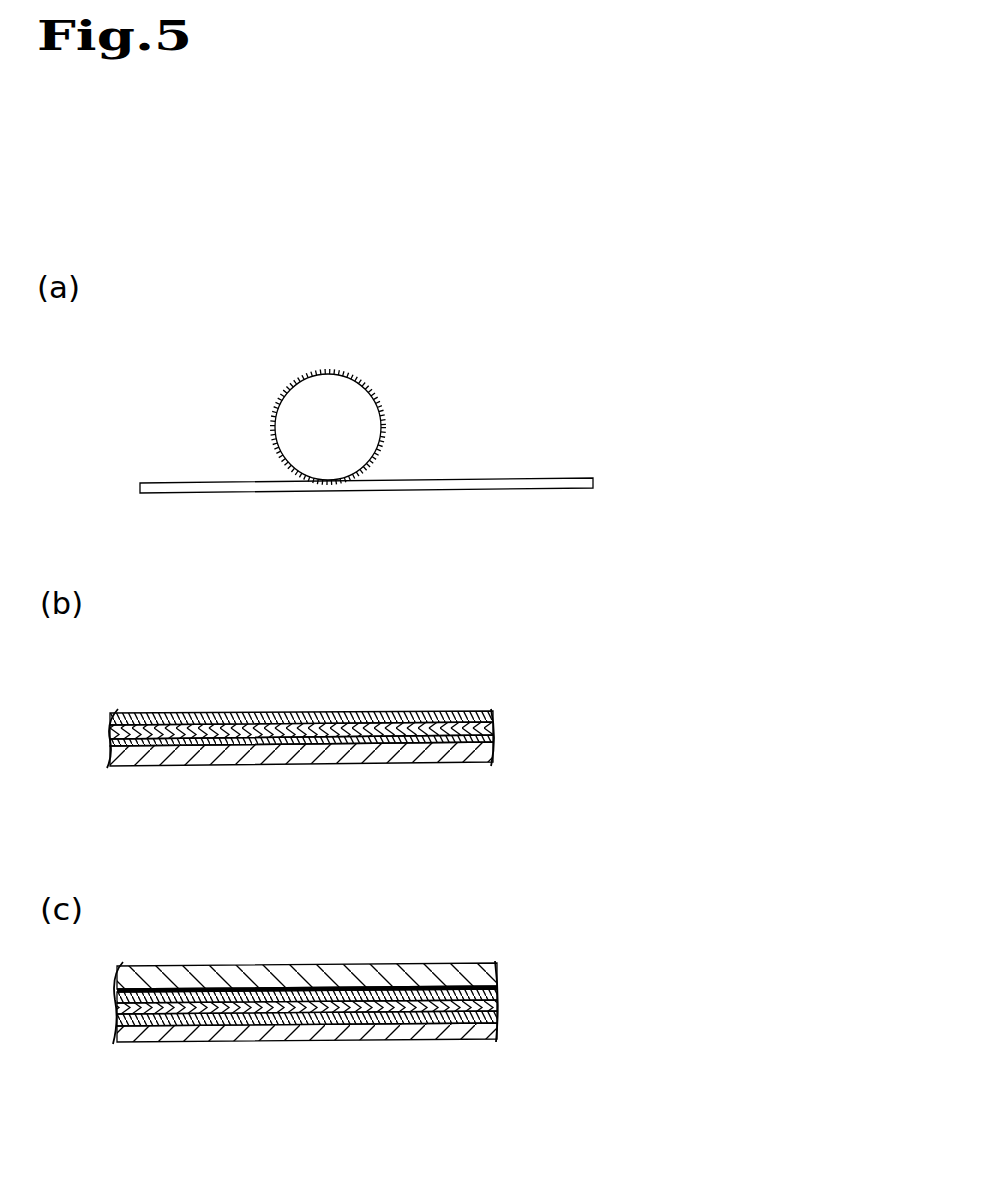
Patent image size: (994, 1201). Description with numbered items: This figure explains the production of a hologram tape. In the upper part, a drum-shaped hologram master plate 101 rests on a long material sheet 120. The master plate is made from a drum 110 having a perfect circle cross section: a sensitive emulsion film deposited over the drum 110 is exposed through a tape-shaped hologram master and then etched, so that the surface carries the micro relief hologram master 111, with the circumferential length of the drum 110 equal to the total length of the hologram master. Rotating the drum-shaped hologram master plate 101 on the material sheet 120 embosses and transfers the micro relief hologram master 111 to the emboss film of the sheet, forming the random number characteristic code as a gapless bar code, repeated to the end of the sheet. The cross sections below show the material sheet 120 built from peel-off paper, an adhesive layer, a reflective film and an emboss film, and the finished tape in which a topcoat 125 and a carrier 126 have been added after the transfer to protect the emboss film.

The drum-shaped hologram master plate 101 is at (426, 385).
The drum 110 is at (290, 422).
The micro relief hologram master 111 is at (527, 427).
The material sheet 120 is at (437, 497).
The topcoat 125 is at (498, 983).
The carrier 126 is at (497, 972).